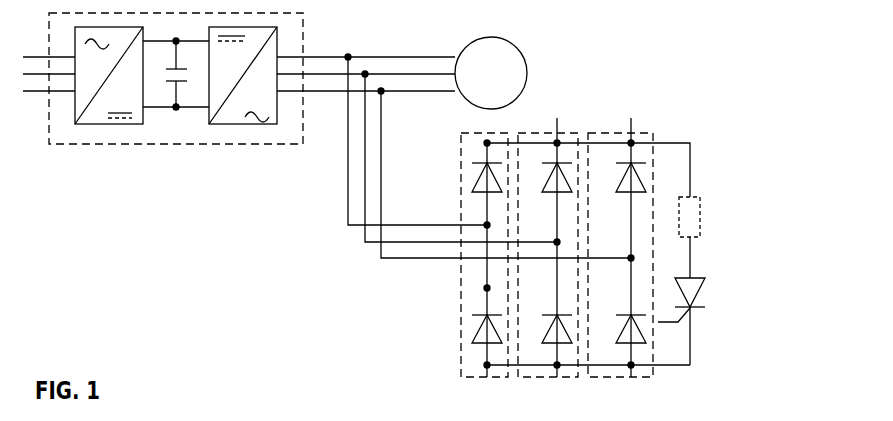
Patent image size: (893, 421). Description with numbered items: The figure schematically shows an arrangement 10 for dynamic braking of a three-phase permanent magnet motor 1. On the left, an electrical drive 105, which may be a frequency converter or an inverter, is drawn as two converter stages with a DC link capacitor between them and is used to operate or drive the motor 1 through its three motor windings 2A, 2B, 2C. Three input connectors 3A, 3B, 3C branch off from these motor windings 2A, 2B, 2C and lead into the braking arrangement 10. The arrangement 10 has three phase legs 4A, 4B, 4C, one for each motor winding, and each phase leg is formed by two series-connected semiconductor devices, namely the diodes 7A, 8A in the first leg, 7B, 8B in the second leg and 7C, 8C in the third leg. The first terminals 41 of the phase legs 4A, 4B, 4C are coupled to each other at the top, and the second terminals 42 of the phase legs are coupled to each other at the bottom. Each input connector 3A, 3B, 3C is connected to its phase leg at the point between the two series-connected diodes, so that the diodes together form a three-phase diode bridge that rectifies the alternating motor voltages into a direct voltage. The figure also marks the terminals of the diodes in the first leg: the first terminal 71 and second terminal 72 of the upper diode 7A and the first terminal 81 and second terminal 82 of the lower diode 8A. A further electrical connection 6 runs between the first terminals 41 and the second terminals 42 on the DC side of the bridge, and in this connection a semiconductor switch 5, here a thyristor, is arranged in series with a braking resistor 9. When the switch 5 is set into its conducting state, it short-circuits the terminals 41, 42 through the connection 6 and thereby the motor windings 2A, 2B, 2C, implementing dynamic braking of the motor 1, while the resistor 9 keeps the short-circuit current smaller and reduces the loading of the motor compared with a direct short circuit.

The permanent magnet motor 1 is at (484, 84).
The motor winding 2A is at (367, 56).
The motor winding 2B is at (392, 73).
The motor winding 2C is at (427, 90).
The input connector 3A is at (346, 130).
The input connector 3B is at (363, 165).
The input connector 3C is at (380, 261).
The phase leg 4A is at (462, 182).
The phase leg 4B is at (573, 133).
The phase leg 4C is at (645, 132).
The first terminal 41 is at (485, 141).
The second terminal 42 is at (482, 377).
The semiconductor switch 5 is at (703, 279).
The further electrical connection 6 is at (690, 160).
The diode 7A is at (478, 170).
The diode 7B is at (552, 194).
The diode 7C is at (624, 194).
The first terminal of switch 71 is at (484, 223).
The second terminal of switch 72 is at (493, 135).
The diode 8A is at (477, 330).
The diode 8B is at (554, 330).
The diode 8C is at (628, 330).
The first terminal of other switch 81 is at (483, 366).
The second terminal of other switch 82 is at (485, 288).
The resistor 9 is at (701, 208).
The arrangement 10 is at (722, 64).
The electrical drive 105 is at (166, 146).